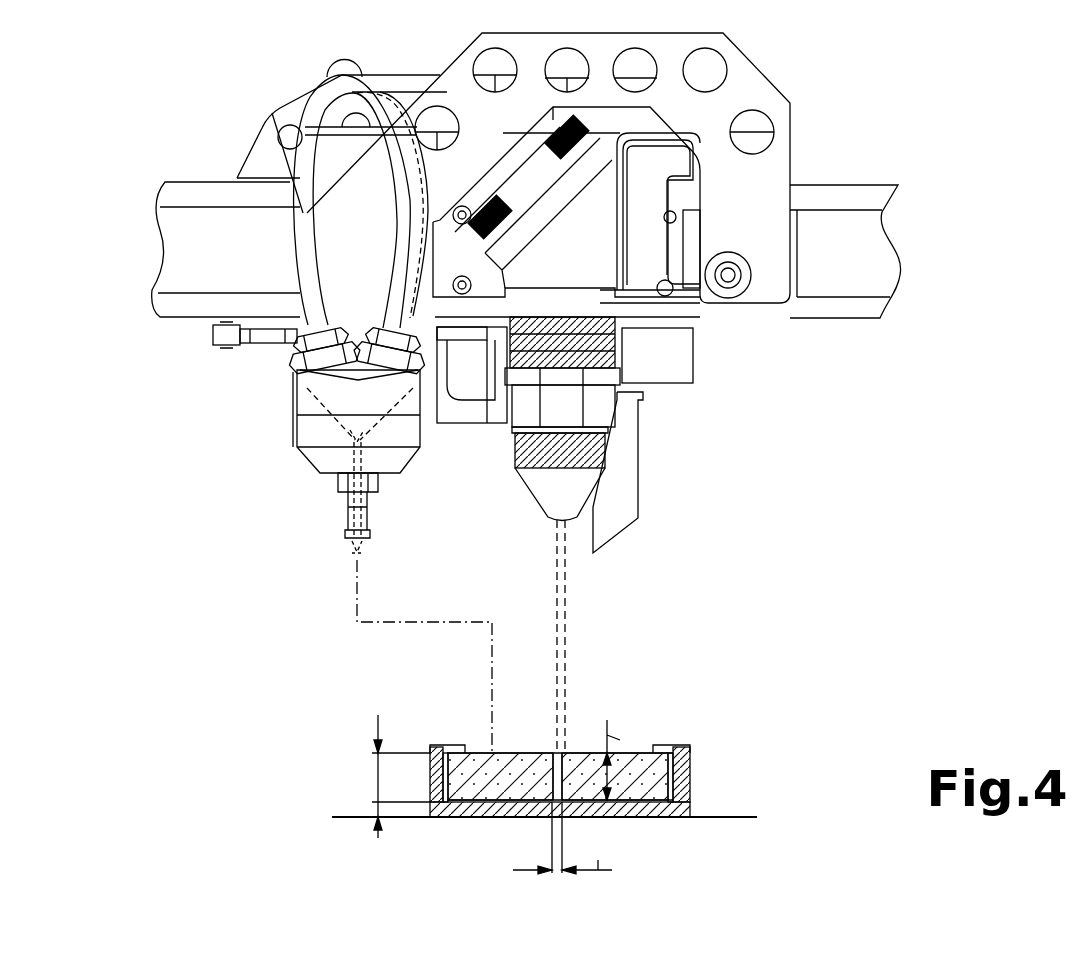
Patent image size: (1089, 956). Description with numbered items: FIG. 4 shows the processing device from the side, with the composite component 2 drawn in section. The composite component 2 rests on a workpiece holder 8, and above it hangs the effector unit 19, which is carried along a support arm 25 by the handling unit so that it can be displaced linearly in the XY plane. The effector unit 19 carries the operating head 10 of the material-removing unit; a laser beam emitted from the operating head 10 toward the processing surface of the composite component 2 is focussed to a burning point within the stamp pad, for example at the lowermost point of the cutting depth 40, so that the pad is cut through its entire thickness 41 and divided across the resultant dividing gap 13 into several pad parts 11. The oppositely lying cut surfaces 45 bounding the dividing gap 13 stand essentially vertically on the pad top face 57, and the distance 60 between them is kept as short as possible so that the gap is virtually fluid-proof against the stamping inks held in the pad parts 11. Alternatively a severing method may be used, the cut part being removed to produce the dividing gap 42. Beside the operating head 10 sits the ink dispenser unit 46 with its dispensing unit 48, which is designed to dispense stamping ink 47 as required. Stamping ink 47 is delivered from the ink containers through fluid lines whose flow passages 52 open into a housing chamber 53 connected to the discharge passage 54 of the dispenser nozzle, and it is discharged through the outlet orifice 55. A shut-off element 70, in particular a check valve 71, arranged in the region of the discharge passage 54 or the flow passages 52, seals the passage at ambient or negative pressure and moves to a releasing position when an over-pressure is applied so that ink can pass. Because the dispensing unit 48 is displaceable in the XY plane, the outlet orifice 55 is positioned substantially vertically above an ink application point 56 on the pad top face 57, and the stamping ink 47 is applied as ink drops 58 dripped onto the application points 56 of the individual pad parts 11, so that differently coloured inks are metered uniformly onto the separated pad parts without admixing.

The composite component 2 is at (775, 718).
The workpiece holder 8 is at (720, 807).
The operating head 10 is at (688, 500).
The pad parts 11 is at (480, 765).
The dividing gap 13 is at (548, 735).
The effector unit 19 is at (792, 441).
The support arm 25 is at (845, 228).
The cutting depth 40 is at (600, 752).
The thickness 41 is at (368, 770).
The dividing gap 42 is at (430, 755).
The cut surfaces 45 is at (557, 755).
The ink dispenser unit 46 is at (238, 458).
The stamping ink 47 is at (385, 546).
The dispensing unit 48 is at (298, 528).
The flow passages 52 is at (403, 305).
The housing chamber 53 is at (322, 395).
The discharge passage 54 is at (362, 465).
The outlet orifice 55 is at (345, 550).
The ink application points 56 is at (432, 813).
The pad top face 57 is at (637, 753).
The ink drops 58 is at (375, 556).
The distance 60 is at (598, 863).
The shut-off element 70 is at (338, 443).
The check valve 71 is at (330, 425).